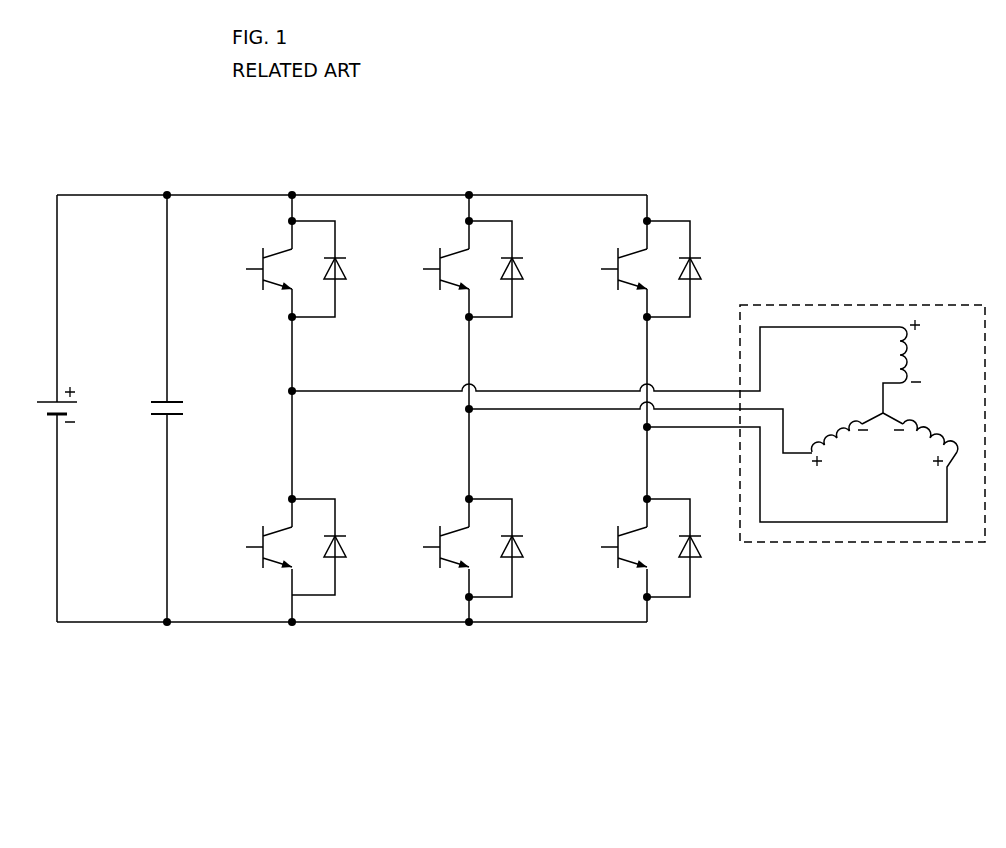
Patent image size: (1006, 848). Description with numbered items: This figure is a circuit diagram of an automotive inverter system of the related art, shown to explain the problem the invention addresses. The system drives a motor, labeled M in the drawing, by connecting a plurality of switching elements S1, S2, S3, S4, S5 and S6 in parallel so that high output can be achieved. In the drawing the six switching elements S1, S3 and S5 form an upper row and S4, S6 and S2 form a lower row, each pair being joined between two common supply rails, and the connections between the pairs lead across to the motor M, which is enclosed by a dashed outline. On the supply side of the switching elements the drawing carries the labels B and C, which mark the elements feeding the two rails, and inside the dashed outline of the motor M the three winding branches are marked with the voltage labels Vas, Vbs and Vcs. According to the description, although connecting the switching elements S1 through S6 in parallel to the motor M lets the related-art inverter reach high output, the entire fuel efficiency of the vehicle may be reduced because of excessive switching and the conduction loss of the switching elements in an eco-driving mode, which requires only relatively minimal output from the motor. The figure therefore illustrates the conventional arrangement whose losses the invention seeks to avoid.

The switching element S1 is at (289, 269).
The switching element S2 is at (644, 548).
The switching element S3 is at (466, 269).
The switching element S4 is at (289, 547).
The switching element S5 is at (644, 269).
The switching element S6 is at (466, 548).
The battery B is at (57, 414).
The capacitor C is at (167, 422).
The motor M is at (862, 393).
The a-phase stator winding voltage Vas is at (913, 366).
The b-phase stator winding voltage Vbs is at (839, 443).
The c-phase stator winding voltage Vcs is at (926, 443).